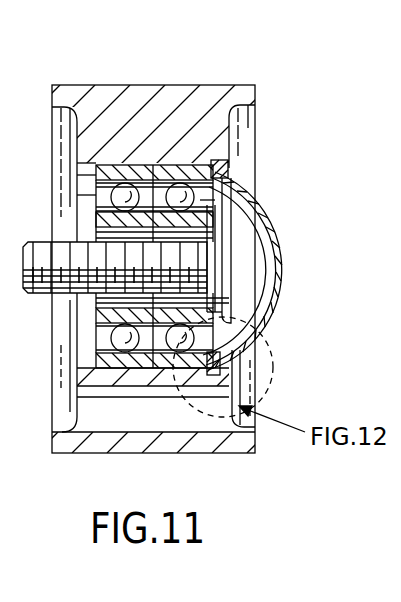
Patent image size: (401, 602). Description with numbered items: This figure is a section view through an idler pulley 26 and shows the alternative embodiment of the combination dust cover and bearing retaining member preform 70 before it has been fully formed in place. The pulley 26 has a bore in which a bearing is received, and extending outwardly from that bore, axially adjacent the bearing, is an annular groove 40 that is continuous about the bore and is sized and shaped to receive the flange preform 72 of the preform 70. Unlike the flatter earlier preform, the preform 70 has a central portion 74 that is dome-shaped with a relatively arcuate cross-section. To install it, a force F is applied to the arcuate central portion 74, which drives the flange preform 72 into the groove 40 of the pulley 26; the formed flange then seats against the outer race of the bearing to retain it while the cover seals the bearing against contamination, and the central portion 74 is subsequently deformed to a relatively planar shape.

The idler pulley 26 is at (93, 95).
The annular groove 40 is at (213, 165).
The combination dust cover and bearing retaining member preform 70 is at (270, 220).
The flange preform 72 is at (222, 177).
The central portion 74 is at (263, 313).
The force F is at (295, 262).